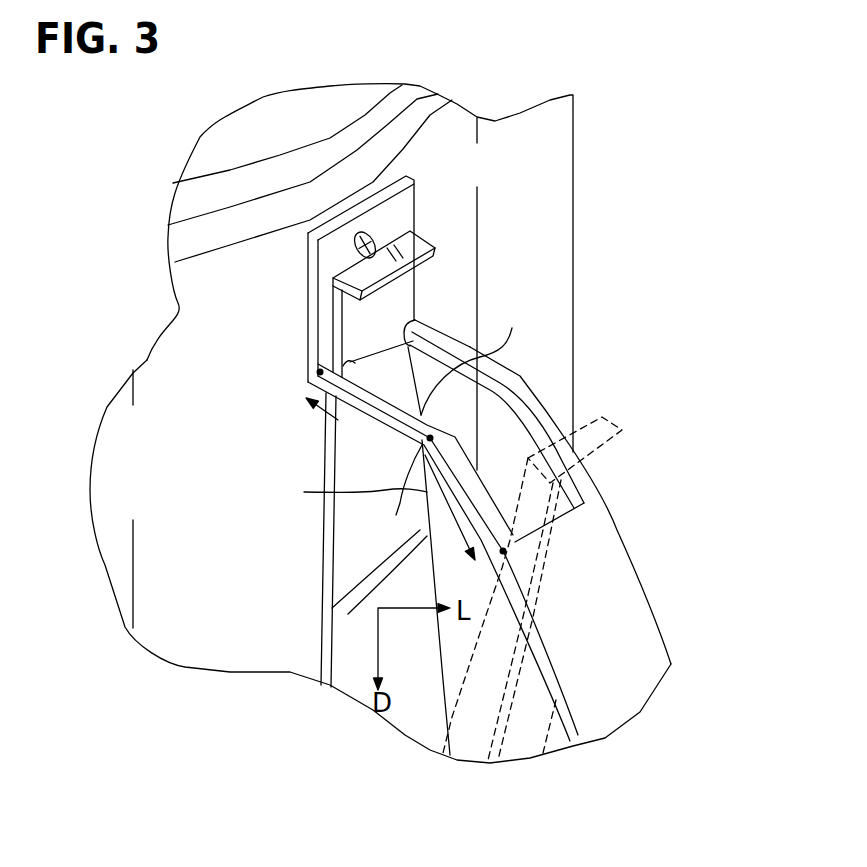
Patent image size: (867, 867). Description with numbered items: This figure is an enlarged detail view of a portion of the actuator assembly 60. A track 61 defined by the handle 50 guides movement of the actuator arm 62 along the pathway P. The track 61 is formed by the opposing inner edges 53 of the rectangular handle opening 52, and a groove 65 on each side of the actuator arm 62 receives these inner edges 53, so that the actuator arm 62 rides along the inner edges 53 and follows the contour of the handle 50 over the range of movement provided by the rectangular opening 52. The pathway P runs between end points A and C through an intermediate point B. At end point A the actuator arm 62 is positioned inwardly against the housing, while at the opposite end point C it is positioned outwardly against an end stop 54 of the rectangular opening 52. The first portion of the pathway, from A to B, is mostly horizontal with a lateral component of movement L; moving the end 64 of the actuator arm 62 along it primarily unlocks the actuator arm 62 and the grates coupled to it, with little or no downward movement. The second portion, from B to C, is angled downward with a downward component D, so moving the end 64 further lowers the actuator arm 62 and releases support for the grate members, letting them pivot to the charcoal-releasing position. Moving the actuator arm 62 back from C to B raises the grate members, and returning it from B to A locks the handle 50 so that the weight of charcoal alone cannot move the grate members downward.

The handle 50 is at (628, 606).
The rectangular handle opening 52 is at (500, 417).
The inner edges 53 is at (480, 357).
The end stop 54 is at (557, 517).
The actuator assembly 60 is at (250, 466).
The track 61 is at (558, 387).
The actuator arm 62 is at (333, 563).
The end of the actuator arm 64 is at (413, 242).
The groove 65 is at (409, 325).